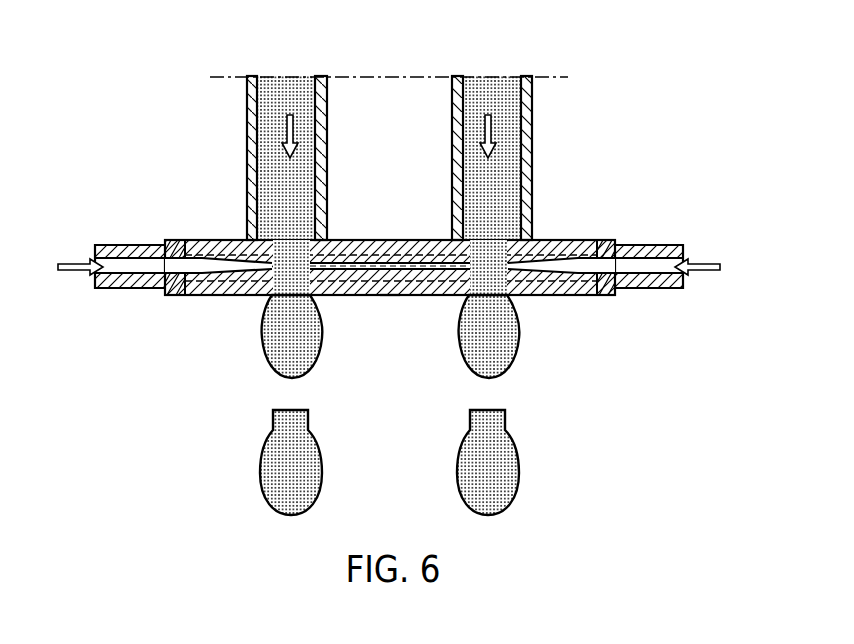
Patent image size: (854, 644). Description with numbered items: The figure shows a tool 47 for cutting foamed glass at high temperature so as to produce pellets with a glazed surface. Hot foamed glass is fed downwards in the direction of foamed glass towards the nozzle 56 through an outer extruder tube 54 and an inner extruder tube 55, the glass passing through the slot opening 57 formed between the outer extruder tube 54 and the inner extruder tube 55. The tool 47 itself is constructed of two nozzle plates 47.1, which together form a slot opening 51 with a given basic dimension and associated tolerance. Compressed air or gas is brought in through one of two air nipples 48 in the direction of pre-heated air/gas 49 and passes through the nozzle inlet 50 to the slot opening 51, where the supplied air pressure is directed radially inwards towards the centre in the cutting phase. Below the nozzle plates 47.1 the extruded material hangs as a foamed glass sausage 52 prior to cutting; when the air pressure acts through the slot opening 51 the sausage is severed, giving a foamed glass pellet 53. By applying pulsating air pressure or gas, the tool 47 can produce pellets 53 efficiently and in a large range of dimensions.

The tool 47 is at (553, 238).
The nozzle plate 47.1 is at (388, 296).
The air nipple 48 is at (661, 288).
The direction of pre-heated air/gas 49 is at (714, 263).
The nozzle inlet 50 is at (583, 295).
The slot opening 51 is at (532, 295).
The foamed glass sausage 52 is at (513, 362).
The foamed glass pellet 53 is at (468, 437).
The outer extruder tube 54 is at (525, 77).
The inner extruder tube 55 is at (457, 77).
The direction of foamed glass towards the nozzle 56 is at (250, 122).
The slot opening between outer and inner extruder tube 57 is at (291, 76).